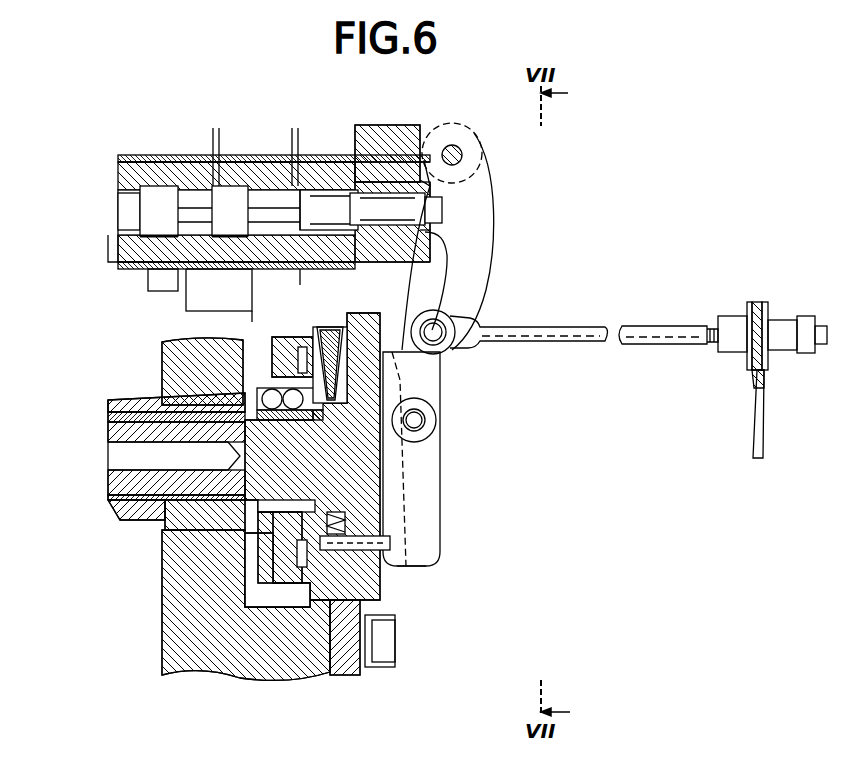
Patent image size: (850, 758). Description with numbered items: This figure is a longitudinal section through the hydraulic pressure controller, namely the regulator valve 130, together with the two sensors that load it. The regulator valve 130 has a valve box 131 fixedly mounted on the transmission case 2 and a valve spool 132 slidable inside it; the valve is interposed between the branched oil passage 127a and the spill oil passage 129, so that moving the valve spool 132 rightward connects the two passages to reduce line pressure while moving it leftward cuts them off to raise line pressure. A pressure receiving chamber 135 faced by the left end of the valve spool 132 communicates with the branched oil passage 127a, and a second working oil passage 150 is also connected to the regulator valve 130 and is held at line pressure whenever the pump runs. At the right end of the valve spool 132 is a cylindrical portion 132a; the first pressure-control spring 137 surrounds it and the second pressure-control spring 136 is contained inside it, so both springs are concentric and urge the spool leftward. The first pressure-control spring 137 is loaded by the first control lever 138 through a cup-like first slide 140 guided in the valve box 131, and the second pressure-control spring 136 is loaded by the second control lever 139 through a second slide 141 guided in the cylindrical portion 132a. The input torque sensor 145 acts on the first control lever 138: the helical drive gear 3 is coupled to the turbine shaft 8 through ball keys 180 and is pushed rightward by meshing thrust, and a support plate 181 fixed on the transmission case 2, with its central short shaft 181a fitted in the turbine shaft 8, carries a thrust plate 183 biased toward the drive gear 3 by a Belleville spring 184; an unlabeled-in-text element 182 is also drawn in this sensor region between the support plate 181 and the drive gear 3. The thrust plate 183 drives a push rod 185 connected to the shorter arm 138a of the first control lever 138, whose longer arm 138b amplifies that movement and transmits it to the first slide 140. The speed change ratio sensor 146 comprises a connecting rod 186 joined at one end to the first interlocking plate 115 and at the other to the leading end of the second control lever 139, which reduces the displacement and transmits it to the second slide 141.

The transmission case 2 is at (228, 655).
The drive gear 3 is at (284, 592).
The turbine shaft 8 is at (112, 478).
The first interlocking plate 115 is at (756, 414).
The branched oil passage 127a is at (252, 294).
The spill oil passage 129 is at (292, 140).
The regulator valve 130 is at (273, 207).
The valve box 131 is at (157, 170).
The valve spool 132 is at (210, 225).
The cylindrical portion 132a is at (435, 244).
The pressure receiving chamber 135 is at (118, 240).
The second pressure-control spring 136 is at (387, 209).
The first pressure-control spring 137 is at (302, 176).
The first control lever 138 is at (440, 459).
The shorter arm 138a is at (440, 548).
The longer arm 138b is at (416, 280).
The second control lever 139 is at (480, 203).
The first slide 140 is at (387, 153).
The second slide 141 is at (426, 210).
The input torque sensor 145 is at (390, 565).
The speed change ratio sensor 146 is at (650, 318).
The second working oil passage 150 is at (219, 142).
The ball keys 180 is at (290, 416).
The support plate 181 is at (395, 495).
The central short shaft 181a is at (176, 515).
The piston 182 is at (286, 541).
The thrust plate 183 is at (362, 634).
The Belleville spring 184 is at (336, 356).
The push rod 185 is at (354, 536).
The connecting rod 186 is at (560, 336).